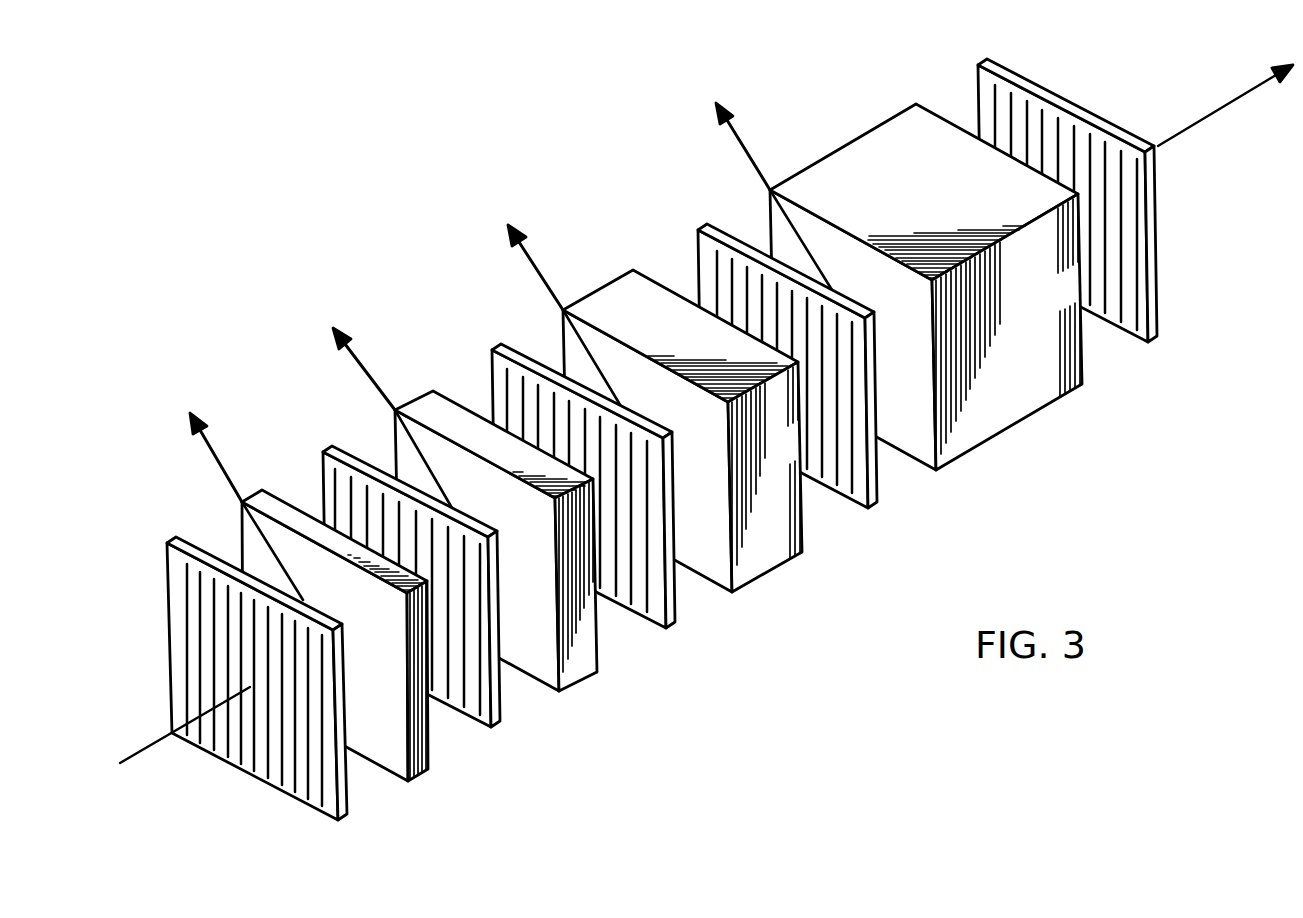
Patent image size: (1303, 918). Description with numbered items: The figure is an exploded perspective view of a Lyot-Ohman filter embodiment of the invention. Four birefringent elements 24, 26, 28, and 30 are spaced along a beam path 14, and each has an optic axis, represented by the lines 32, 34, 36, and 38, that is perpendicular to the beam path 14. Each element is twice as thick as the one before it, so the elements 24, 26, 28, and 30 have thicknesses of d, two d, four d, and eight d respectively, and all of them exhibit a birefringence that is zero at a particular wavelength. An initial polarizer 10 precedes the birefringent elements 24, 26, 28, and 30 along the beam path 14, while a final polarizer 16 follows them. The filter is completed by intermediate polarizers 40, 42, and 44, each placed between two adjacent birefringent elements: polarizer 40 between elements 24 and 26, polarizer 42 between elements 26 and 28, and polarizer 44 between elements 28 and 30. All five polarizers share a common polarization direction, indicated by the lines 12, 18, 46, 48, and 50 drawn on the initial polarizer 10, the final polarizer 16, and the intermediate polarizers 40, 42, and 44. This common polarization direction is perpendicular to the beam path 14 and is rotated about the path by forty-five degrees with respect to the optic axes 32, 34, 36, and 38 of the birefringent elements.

The initial polarizer 10 is at (326, 693).
The polarization direction line 12 is at (287, 787).
The beam path 14 is at (148, 745).
The final polarizer 16 is at (1108, 253).
The polarization direction line 18 is at (1128, 317).
The birefringent element 24 is at (433, 757).
The birefringent element 26 is at (585, 668).
The birefringent element 28 is at (777, 560).
The birefringent element 30 is at (1013, 413).
The optic axis 32 is at (208, 445).
The optic axis 34 is at (358, 362).
The optic axis 36 is at (528, 257).
The optic axis 38 is at (733, 130).
The intermediate polarizer 40 is at (478, 619).
The intermediate polarizer 42 is at (635, 527).
The intermediate polarizer 44 is at (835, 411).
The polarization direction line 46 is at (473, 707).
The polarization direction line 48 is at (645, 603).
The polarization direction line 50 is at (845, 495).